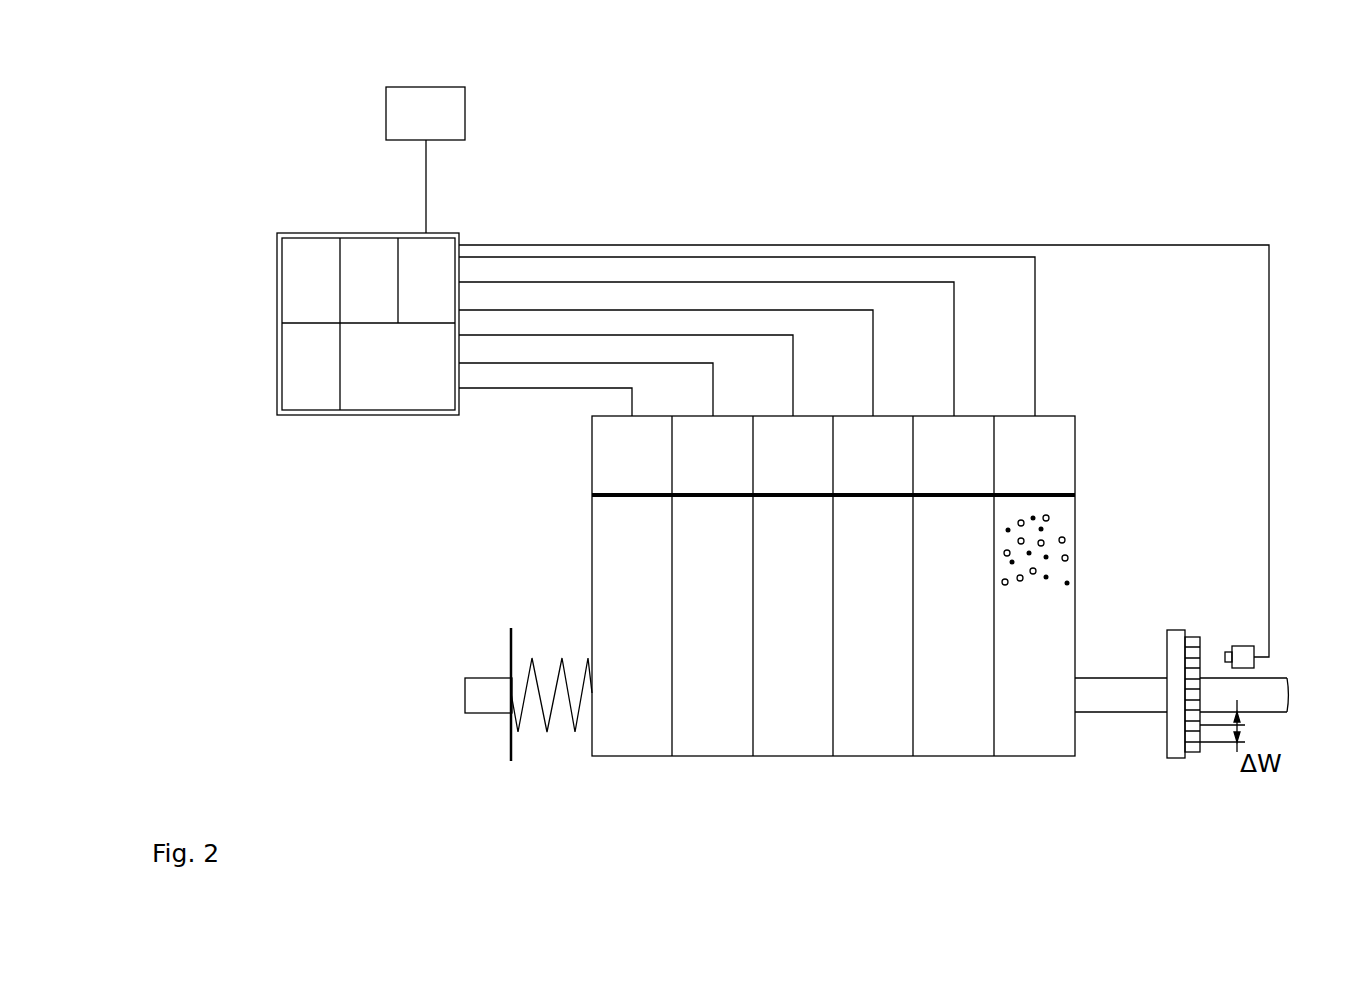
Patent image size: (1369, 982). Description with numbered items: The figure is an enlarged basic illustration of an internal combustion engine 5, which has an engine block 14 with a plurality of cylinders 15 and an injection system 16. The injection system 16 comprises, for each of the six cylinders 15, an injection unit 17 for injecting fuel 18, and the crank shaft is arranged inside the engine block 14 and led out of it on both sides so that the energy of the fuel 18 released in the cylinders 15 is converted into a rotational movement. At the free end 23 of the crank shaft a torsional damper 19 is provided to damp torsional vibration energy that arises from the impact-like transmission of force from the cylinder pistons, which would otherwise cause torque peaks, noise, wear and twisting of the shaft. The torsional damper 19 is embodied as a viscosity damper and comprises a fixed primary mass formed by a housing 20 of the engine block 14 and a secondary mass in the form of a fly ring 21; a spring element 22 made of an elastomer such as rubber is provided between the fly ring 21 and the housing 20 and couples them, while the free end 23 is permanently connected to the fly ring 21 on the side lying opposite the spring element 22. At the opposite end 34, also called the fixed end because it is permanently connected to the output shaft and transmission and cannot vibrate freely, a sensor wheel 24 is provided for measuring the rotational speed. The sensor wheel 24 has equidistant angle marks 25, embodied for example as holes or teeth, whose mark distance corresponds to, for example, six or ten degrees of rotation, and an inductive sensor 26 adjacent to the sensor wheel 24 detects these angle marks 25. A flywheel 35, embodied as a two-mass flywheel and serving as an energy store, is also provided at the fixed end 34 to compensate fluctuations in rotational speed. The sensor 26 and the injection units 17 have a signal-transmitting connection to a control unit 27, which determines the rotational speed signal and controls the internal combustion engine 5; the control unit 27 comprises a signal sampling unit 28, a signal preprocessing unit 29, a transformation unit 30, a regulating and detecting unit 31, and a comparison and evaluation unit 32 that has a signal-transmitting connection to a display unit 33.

The internal combustion engine 5 is at (967, 150).
The engine block 14 is at (1082, 527).
The cylinders 15 is at (653, 745).
The injection system 16 is at (1082, 429).
The injection unit 17 is at (598, 466).
The fuel 18 is at (1068, 558).
The torsional damper 19 is at (551, 652).
The housing 20 is at (612, 758).
The fly ring 21 is at (510, 746).
The spring element 22 is at (540, 720).
The free end 23 is at (490, 668).
The sensor wheel 24 is at (1192, 756).
The angle marks 25 is at (1200, 742).
The inductive sensor 26 is at (1237, 645).
The control unit 27 is at (277, 257).
The signal sampling unit 28 is at (381, 398).
The signal preprocessing unit 29 is at (357, 248).
The transformation unit 30 is at (297, 248).
The regulating and detecting unit 31 is at (309, 400).
The comparison and evaluation unit 32 is at (413, 250).
The display unit 33 is at (460, 104).
The fixed end 34 is at (1298, 716).
The flywheel 35 is at (1175, 762).